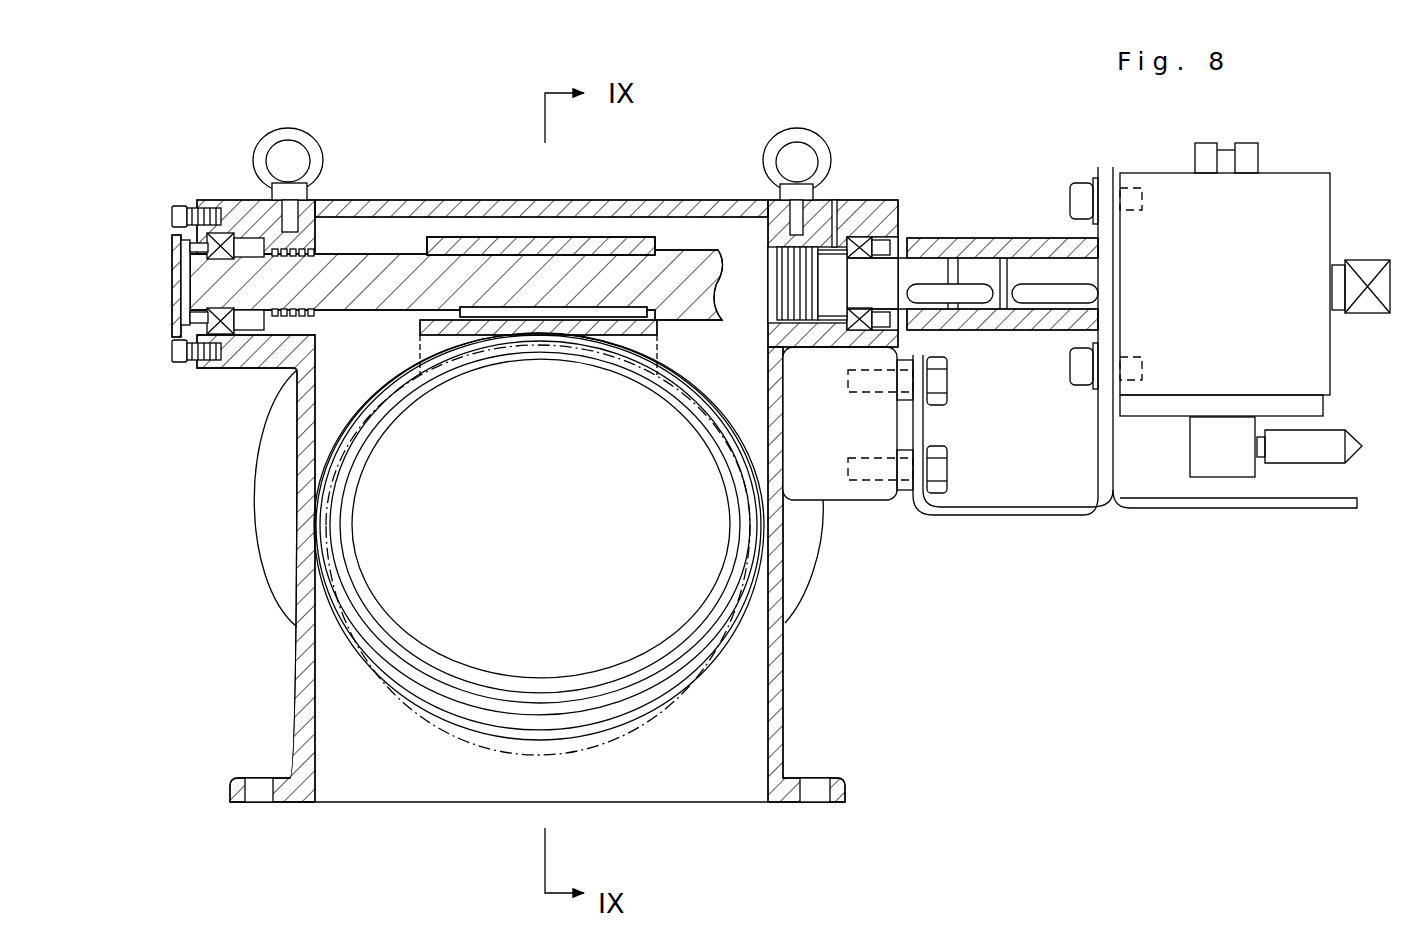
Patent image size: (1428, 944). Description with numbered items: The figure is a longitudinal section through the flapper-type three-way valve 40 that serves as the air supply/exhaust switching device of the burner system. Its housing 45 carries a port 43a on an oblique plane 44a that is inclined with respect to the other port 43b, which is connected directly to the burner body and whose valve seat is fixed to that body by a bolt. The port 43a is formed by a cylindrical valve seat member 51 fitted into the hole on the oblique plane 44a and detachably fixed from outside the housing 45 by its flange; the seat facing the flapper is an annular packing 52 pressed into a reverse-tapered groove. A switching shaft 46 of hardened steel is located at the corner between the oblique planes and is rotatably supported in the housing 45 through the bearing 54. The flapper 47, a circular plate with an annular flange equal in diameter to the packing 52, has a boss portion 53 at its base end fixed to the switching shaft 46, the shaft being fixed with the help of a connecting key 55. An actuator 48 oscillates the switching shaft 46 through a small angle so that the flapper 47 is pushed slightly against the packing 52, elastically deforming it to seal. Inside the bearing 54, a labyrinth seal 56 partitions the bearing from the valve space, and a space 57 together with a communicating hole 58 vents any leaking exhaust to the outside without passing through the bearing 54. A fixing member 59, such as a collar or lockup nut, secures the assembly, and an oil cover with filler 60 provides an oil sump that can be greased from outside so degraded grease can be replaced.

The flapper-type three-way valve 40 is at (1158, 691).
The port 43a is at (680, 578).
The port 43b is at (398, 790).
The oblique plane 44a is at (323, 433).
The housing 45 is at (785, 693).
The switching shaft 46 is at (690, 250).
The flapper 47 is at (508, 747).
The actuator 48 is at (1322, 208).
The cylindrical valve seat member 51 is at (653, 708).
The annular packing 52 is at (595, 717).
The boss portion 53 is at (500, 240).
The bearing 54 is at (222, 208).
The connecting key 55 is at (600, 312).
The labyrinth seal 56 is at (303, 248).
The space 57 is at (250, 250).
The communicating hole 58 is at (833, 207).
The fixing member 59 is at (185, 322).
The oil cover with filler 60 is at (183, 270).